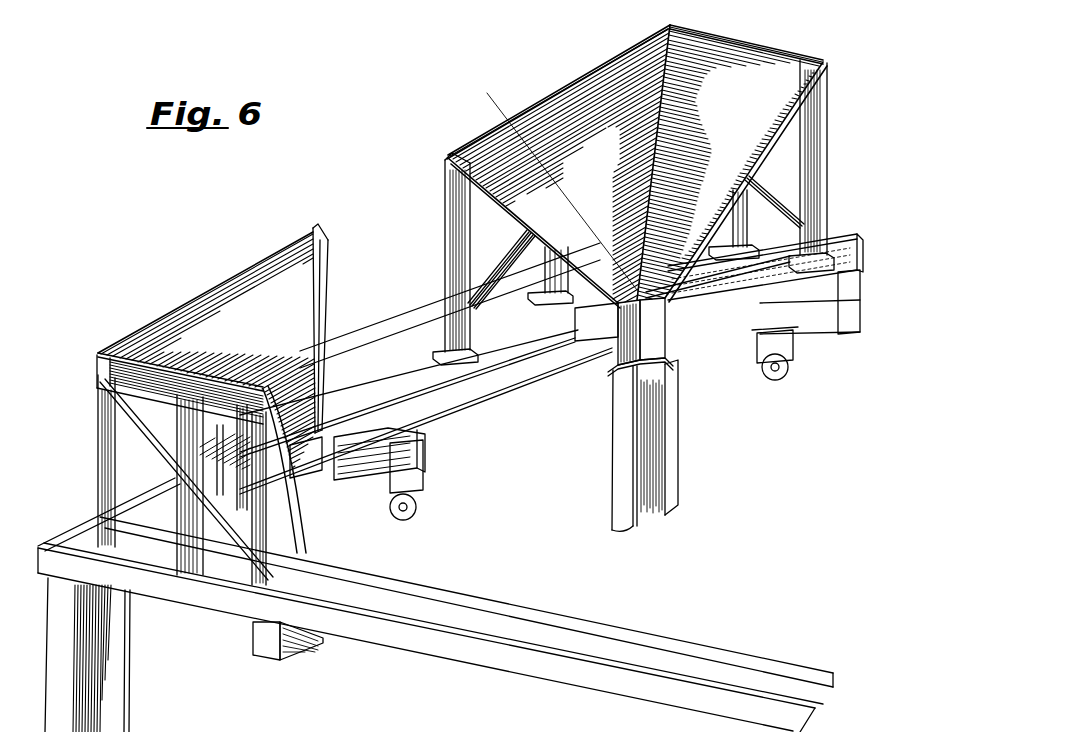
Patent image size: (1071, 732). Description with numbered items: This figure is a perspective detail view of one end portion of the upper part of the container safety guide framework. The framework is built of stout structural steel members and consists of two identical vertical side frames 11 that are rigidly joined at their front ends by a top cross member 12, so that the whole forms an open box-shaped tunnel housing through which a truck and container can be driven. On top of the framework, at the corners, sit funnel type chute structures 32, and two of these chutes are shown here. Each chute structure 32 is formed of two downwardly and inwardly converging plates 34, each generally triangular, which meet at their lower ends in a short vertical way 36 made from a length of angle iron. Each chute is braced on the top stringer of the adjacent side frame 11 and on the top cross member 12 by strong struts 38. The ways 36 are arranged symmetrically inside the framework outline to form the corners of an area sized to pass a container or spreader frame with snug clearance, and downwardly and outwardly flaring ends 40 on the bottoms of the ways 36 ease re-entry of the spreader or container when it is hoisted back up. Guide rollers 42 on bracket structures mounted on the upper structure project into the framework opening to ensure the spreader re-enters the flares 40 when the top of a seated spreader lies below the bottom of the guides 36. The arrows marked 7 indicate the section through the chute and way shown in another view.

The section line 7- 7 is at (513, 104).
The vertical side frame 11 is at (766, 292).
The top cross member 12 is at (385, 345).
The funnel type chute structure 32 is at (705, 25).
The converging plate 34 is at (573, 97).
The vertical way 36 is at (622, 337).
The strut 38 is at (820, 160).
The flaring end 40 is at (613, 372).
The guide roller 42 is at (762, 380).